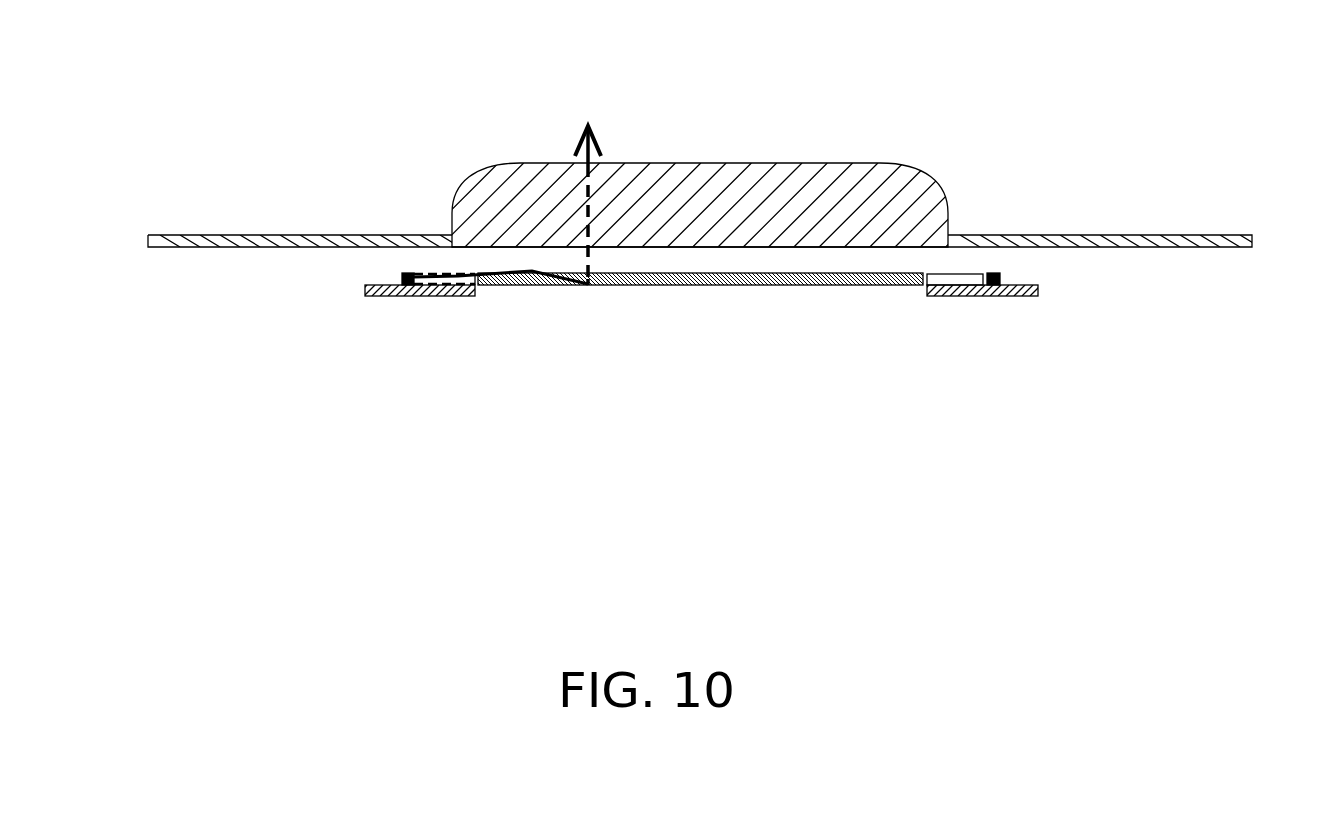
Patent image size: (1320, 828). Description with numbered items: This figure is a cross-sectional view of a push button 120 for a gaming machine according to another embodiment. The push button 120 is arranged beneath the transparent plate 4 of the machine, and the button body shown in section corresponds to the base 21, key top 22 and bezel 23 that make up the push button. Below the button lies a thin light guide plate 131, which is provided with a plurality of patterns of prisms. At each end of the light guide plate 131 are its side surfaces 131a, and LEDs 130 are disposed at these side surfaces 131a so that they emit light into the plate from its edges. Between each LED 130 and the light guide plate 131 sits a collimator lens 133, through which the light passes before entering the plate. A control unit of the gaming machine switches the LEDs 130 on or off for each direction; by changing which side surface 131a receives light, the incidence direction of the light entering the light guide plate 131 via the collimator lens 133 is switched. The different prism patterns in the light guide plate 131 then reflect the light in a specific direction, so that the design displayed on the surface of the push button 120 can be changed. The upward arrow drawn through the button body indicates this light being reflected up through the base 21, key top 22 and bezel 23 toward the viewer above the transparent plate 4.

The transparent plate 4 is at (240, 240).
The push button 120 is at (476, 132).
The base 21 is at (709, 163).
The key top 22 is at (709, 163).
The bezel 23 is at (716, 163).
The light guide plate 131 is at (690, 285).
The side surfaces 131a is at (458, 274).
The LEDs 130 is at (407, 296).
The collimator lens 133 is at (448, 296).